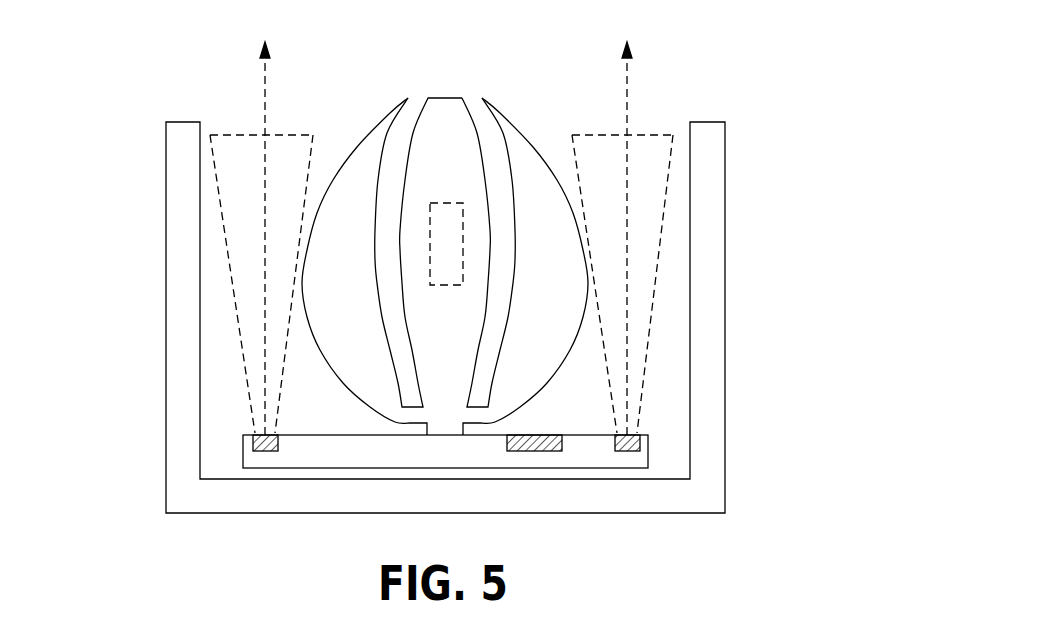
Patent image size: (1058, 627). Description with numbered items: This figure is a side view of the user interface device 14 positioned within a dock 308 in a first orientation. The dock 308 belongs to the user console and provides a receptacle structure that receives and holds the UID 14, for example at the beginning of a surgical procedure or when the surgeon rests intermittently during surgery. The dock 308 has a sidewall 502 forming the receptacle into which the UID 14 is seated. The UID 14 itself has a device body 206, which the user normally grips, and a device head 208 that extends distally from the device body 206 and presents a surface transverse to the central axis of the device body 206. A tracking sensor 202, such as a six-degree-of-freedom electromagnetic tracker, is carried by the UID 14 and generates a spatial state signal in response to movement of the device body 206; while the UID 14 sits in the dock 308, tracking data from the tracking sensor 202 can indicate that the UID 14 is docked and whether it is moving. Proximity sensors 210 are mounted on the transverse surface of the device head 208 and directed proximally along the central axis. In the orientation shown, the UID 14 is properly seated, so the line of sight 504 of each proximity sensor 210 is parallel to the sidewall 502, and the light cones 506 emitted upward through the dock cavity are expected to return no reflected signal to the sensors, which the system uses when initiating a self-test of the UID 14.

The user interface device 14 is at (497, 88).
The tracking sensor 202 is at (463, 245).
The device body 206 is at (372, 145).
The device head 208 is at (330, 450).
The proximity sensors 210 is at (260, 433).
The dock 308 is at (725, 253).
The sidewall 502 is at (178, 252).
The line of sight 504 is at (265, 178).
The light cones 506 is at (238, 313).